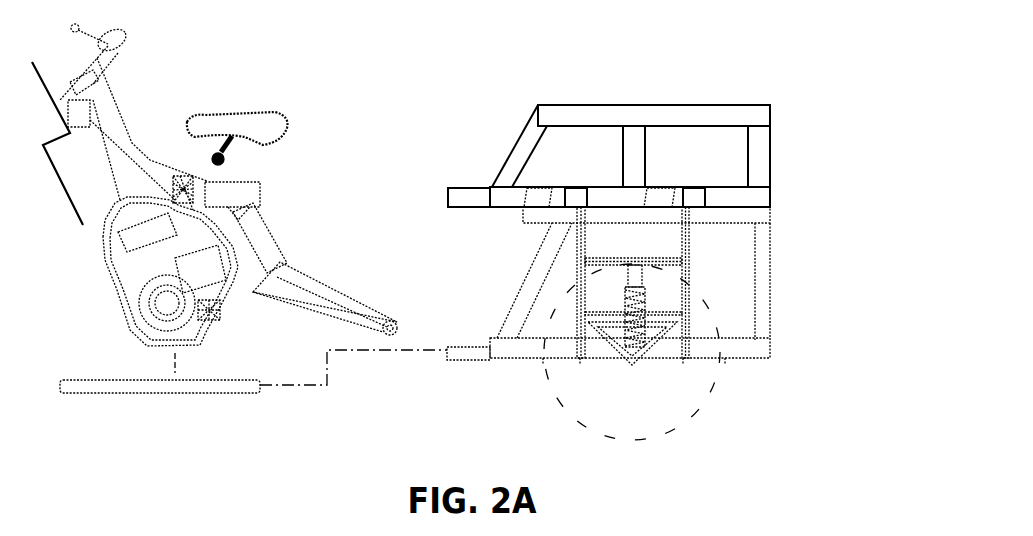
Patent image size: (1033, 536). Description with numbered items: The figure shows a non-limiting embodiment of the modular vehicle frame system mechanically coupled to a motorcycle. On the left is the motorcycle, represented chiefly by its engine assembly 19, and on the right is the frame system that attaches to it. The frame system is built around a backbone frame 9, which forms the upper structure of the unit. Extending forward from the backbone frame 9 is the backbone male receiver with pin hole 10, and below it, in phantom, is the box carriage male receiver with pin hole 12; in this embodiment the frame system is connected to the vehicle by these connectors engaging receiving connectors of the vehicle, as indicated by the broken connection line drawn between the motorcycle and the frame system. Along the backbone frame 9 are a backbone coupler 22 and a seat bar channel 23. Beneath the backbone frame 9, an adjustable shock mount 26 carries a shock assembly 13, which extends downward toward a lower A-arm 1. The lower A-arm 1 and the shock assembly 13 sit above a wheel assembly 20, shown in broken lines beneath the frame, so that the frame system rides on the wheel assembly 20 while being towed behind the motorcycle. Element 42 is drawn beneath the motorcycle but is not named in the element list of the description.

The lower A-arm 1 is at (662, 352).
The backbone frame 9 is at (770, 105).
The backbone male receiver with pin hole 10 is at (475, 187).
The box carriage male receiver with pin hole 12 is at (490, 342).
The shock assembly 13 is at (637, 310).
The engine assembly 19 is at (138, 262).
The wheel assembly 20 is at (698, 412).
The backbone coupler 22 is at (545, 195).
The seat bar channel 23 is at (705, 200).
The adjustable shock mount 26 is at (665, 262).
The base plate 42 is at (73, 380).